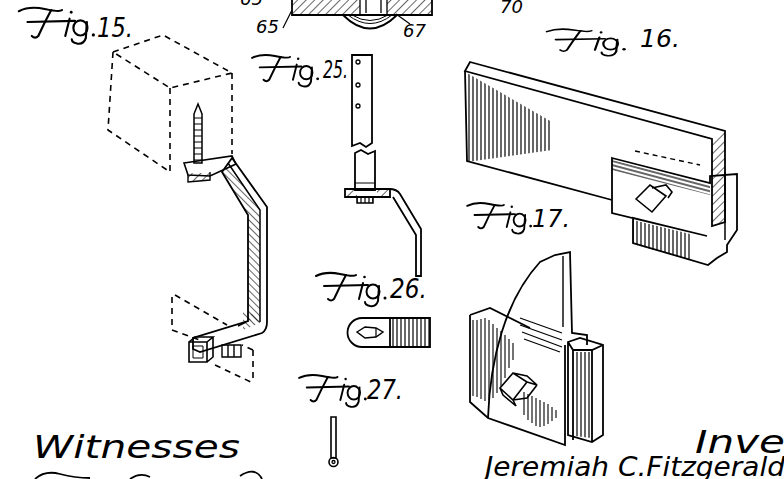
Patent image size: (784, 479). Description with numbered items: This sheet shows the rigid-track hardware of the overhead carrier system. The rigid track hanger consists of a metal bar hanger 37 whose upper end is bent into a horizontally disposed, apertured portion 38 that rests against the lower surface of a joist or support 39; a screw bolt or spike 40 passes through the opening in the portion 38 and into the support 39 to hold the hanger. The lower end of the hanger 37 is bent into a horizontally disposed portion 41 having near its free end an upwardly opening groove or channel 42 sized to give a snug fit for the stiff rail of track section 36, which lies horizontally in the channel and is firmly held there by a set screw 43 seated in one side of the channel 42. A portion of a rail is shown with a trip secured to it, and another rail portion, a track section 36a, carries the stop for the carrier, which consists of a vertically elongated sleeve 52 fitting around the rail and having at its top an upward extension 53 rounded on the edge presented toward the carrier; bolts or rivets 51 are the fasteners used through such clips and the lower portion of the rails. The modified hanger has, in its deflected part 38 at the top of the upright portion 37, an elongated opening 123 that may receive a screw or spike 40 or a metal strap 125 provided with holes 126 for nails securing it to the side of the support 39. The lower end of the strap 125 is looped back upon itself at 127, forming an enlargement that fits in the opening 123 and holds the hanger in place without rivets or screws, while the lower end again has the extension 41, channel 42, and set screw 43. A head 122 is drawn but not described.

In FIG. 15, the track section 36 is at (170, 312).
In FIG. 16, the track section 36 is at (595, 144).
In FIG. 17, the track section 36a is at (485, 313).
In FIG. 15, the hanger 37 is at (250, 248).
In FIG. 25, the hanger 37 is at (412, 230).
In FIG. 26, the hanger 37 is at (418, 319).
In FIG. 15, the apertured portion 38 is at (186, 170).
In FIG. 25, the apertured portion 38 is at (348, 192).
In FIG. 26, the apertured portion 38 is at (396, 347).
In FIG. 15, the support 39 is at (234, 113).
In FIG. 15, the screw bolt or spike 40 is at (195, 135).
In FIG. 15, the horizontally disposed portion 41 is at (236, 326).
In FIG. 15, the groove or channel 42 is at (189, 340).
In FIG. 15, the set screw 43 is at (241, 350).
In FIG. 17, the bolt or rivet 51 is at (505, 393).
In FIG. 16, the sleeve 52 is at (674, 208).
In FIG. 17, the sleeve 52 is at (552, 388).
In FIG. 17, the upward extension 53 is at (552, 303).
In FIG. 26, the head 122 is at (362, 330).
In FIG. 26, the elongated opening 123 is at (357, 335).
In FIG. 25, the metal strap 125 is at (372, 157).
In FIG. 25, the holes 126 is at (361, 85).
In FIG. 25, the looped end 127 is at (364, 203).
In FIG. 27, the looped end 127 is at (330, 460).